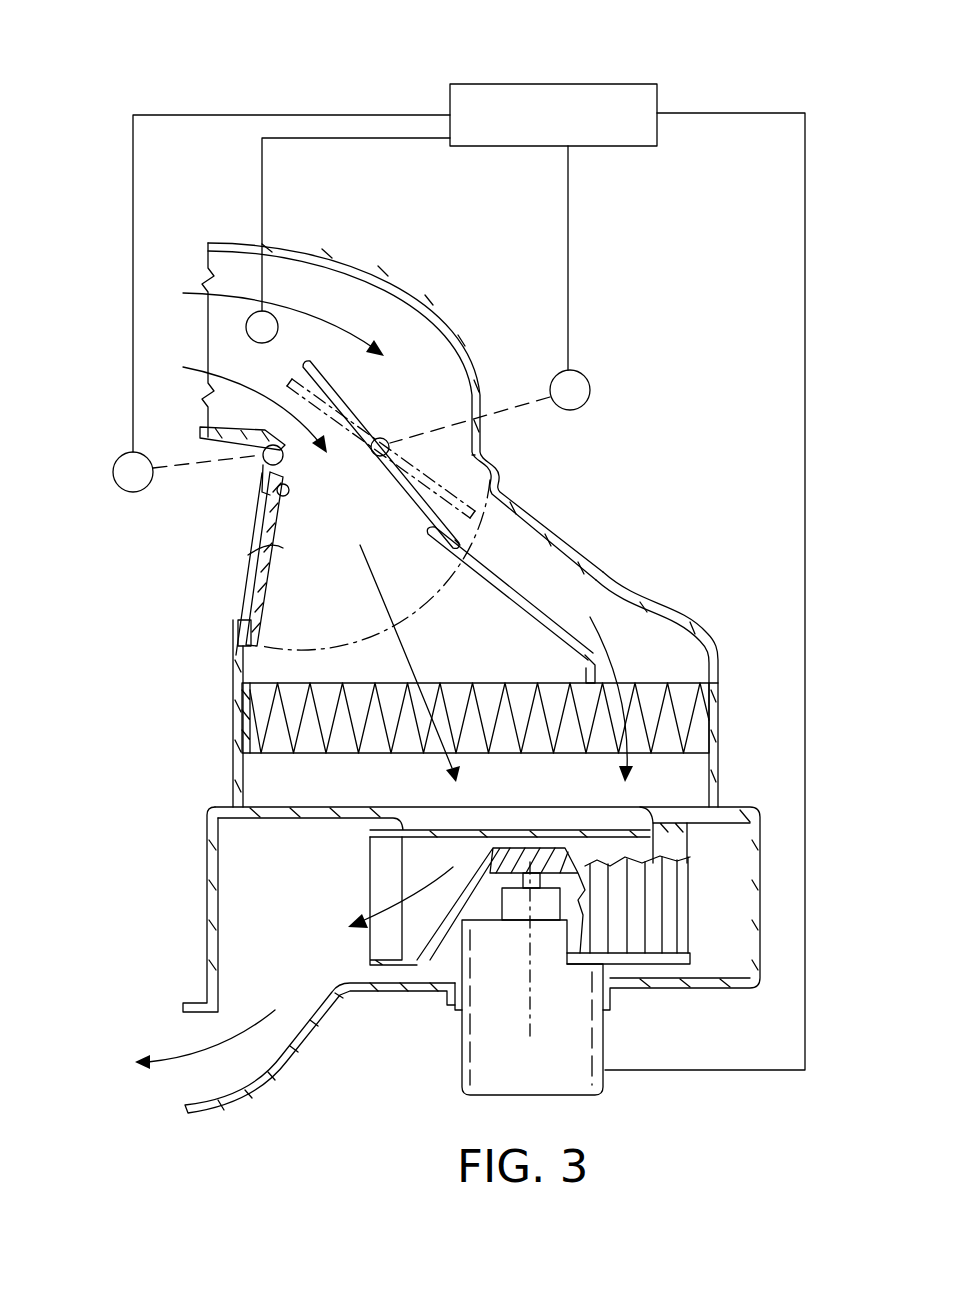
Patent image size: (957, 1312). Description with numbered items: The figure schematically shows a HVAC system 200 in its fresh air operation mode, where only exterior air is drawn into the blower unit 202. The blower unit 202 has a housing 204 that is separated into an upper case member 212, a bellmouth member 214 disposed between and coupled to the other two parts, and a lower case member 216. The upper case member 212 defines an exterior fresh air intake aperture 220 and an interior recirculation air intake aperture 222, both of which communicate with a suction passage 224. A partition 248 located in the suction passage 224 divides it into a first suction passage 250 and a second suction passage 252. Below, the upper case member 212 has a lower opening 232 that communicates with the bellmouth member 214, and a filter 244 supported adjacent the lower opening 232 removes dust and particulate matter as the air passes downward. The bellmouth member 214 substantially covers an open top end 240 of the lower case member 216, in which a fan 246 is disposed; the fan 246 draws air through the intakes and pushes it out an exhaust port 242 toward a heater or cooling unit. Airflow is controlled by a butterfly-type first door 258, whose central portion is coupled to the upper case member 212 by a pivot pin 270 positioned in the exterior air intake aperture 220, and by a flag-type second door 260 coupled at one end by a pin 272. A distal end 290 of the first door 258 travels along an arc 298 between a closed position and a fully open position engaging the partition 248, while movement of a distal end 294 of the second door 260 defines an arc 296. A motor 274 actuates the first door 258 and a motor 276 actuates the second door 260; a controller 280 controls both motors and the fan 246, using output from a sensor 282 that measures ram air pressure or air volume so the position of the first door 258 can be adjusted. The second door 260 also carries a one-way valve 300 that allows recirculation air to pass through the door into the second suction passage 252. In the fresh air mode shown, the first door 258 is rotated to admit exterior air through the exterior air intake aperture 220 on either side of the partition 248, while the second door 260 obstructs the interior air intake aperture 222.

The HVAC system 200 is at (770, 84).
The blower unit 202 is at (695, 524).
The housing 204 is at (560, 516).
The upper case member 212 is at (357, 267).
The bellmouth member 214 is at (720, 697).
The lower case member 216 is at (760, 875).
The exterior fresh air intake aperture 220 is at (200, 330).
The interior recirculation air intake aperture 222 is at (243, 557).
The suction passage 224 is at (580, 580).
The lower opening 232 is at (660, 680).
The open top end 240 is at (508, 818).
The exhaust port 242 is at (188, 1033).
The filter 244 is at (293, 718).
The fan 246 is at (712, 906).
The partition 248 is at (503, 590).
The first suction passage 250 is at (298, 663).
The second suction passage 252 is at (637, 630).
The first door 258 is at (333, 383).
The second door 260 is at (272, 490).
The pivot pin 270 is at (387, 438).
The pin 272 is at (287, 461).
The motor 274 is at (588, 382).
The motor 276 is at (120, 486).
The controller 280 is at (605, 146).
The sensor 282 is at (275, 318).
The distal end of first door 290 is at (455, 528).
The distal end of second door 294 is at (237, 634).
The arc 296 is at (350, 637).
The arc 298 is at (508, 490).
The one-way valve 300 is at (278, 550).